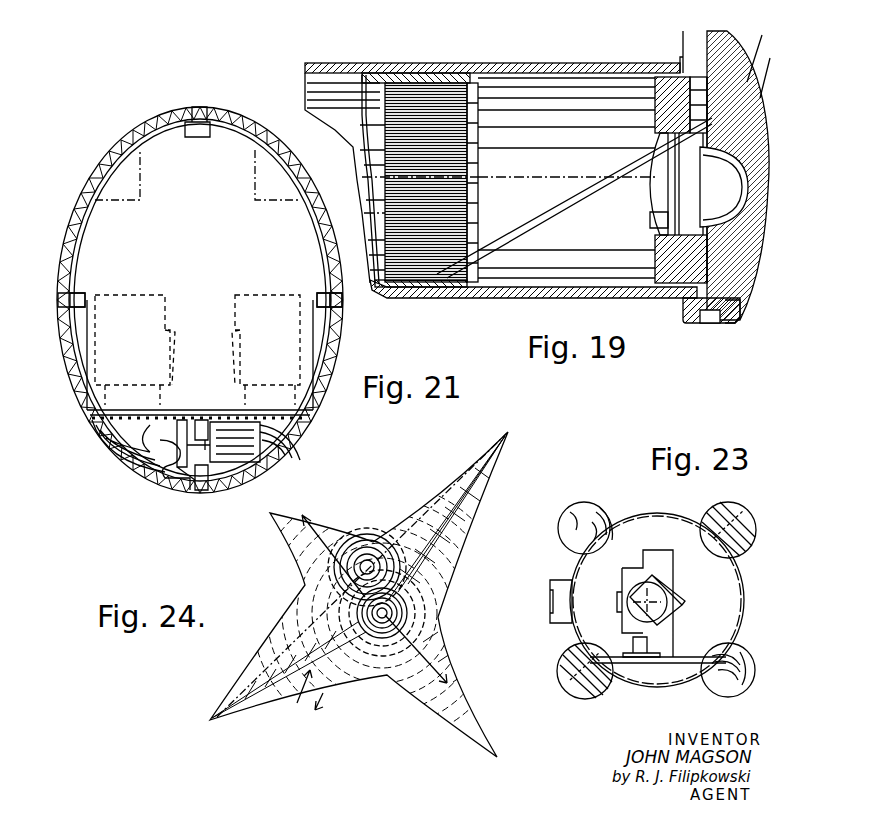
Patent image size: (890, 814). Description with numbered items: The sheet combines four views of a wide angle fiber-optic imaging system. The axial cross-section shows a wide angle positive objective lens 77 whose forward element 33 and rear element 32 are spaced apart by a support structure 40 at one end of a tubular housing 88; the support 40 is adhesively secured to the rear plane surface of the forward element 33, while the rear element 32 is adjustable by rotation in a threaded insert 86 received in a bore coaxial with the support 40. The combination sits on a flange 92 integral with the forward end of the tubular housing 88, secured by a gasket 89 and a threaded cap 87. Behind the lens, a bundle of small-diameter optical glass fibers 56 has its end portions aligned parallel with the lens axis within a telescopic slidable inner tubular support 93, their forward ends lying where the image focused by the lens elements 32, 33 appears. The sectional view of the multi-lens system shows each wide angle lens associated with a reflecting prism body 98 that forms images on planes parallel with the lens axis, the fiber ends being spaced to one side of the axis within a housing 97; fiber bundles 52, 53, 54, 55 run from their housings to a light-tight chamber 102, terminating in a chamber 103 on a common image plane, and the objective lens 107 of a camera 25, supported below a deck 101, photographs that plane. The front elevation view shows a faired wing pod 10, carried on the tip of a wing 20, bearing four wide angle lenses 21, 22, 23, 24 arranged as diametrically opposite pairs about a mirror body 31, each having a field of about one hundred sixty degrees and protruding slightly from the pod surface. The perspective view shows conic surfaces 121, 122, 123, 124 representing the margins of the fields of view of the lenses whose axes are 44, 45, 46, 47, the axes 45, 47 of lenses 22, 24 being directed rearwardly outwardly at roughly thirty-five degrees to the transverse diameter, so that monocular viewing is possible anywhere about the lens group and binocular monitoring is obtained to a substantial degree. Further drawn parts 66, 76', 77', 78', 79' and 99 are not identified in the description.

In FIG. 23, the wing pod 10 is at (743, 600).
In FIG. 23, the wing 20 is at (553, 590).
In FIG. 23, the wide angle lens 21 is at (600, 512).
In FIG. 23, the wide angle lens 22 is at (748, 548).
In FIG. 23, the wide angle lens 23 is at (718, 688).
In FIG. 23, the wide angle lens 24 is at (560, 660).
In FIG. 21, the camera 25 is at (290, 437).
In FIG. 23, the camera 25 is at (670, 578).
In FIG. 23, the mirror body 31 is at (672, 607).
In FIG. 19, the rear element 32 is at (655, 170).
In FIG. 19, the forward element 33 is at (742, 280).
In FIG. 19, the support structure 40 is at (655, 110).
In FIG. 24, the lens axis 44 is at (340, 548).
In FIG. 24, the lens axis 45 is at (468, 571).
In FIG. 24, the lens axis 46 is at (423, 662).
In FIG. 24, the lens axis 47 is at (323, 693).
In FIG. 21, the fiber bundle 52 is at (150, 145).
In FIG. 21, the fiber bundle 53 is at (288, 336).
In FIG. 21, the fiber bundle 54 is at (150, 447).
In FIG. 21, the fiber bundle 55 is at (118, 302).
In FIG. 19, the optical glass fibers 56 is at (372, 66).
In FIG. 19, the coil 66 is at (478, 195).
In FIG. 21, the bracket 76' is at (213, 110).
In FIG. 19, the wide angle positive objective lens 77 is at (660, 155).
In FIG. 21, the bracket 77' is at (350, 316).
In FIG. 21, the bracket 78' is at (166, 481).
In FIG. 21, the bracket 79' is at (60, 274).
In FIG. 19, the threaded insert 86 is at (652, 220).
In FIG. 19, the threaded cap 87 is at (732, 320).
In FIG. 21, the tubular housing 88 is at (322, 293).
In FIG. 19, the tubular housing 88 is at (512, 298).
In FIG. 19, the gasket 89 is at (710, 323).
In FIG. 19, the flange 92 is at (683, 302).
In FIG. 19, the inner tubular support 93 is at (415, 85).
In FIG. 21, the housing 97 is at (312, 298).
In FIG. 21, the reflecting prism body 98 is at (87, 295).
In FIG. 21, the truss frame 99 is at (122, 160).
In FIG. 21, the deck 101 is at (240, 410).
In FIG. 21, the light-tight chamber 102 is at (180, 420).
In FIG. 21, the chamber 103 is at (208, 418).
In FIG. 21, the objective lens 107 is at (265, 472).
In FIG. 24, the conic surface 121 is at (320, 590).
In FIG. 24, the conic surface 122 is at (487, 520).
In FIG. 24, the conic surface 123 is at (297, 703).
In FIG. 24, the conic surface 124 is at (277, 671).